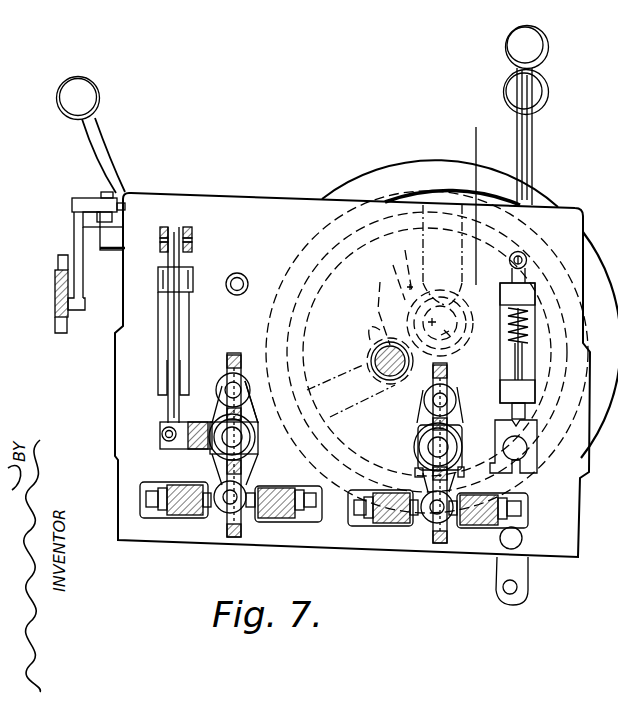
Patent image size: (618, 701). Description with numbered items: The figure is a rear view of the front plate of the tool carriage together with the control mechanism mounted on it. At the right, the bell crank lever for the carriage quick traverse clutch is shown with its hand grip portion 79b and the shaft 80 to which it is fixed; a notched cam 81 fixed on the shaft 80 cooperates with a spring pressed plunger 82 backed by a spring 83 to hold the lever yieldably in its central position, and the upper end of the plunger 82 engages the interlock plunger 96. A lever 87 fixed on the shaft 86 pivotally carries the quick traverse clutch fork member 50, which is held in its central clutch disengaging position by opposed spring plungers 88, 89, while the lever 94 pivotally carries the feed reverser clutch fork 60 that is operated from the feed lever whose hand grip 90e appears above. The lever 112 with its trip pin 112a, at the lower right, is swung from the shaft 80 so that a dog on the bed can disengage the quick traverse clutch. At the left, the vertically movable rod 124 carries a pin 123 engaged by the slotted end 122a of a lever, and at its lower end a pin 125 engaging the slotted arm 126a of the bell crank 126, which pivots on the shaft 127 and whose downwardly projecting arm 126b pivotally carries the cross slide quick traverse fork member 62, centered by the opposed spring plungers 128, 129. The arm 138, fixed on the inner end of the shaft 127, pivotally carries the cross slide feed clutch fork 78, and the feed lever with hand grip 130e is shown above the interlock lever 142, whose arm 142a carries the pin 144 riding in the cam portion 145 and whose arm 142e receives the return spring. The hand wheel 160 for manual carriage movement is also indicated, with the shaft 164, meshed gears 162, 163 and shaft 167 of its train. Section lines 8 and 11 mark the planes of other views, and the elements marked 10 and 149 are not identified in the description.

The hand grip 130e is at (78, 102).
The nut 149 is at (102, 194).
The arm of interlock lever 142e is at (103, 208).
The multiple arm lever 142 is at (72, 237).
The arm portion of interlock lever 142a is at (82, 248).
The cam portion 145 is at (58, 270).
The pin 144 is at (57, 293).
The vertically movable rod 124 is at (170, 332).
The slotted end of lever 122a is at (185, 230).
The pin 123 is at (193, 242).
The section line 11- 11 is at (180, 218).
The feed reverser clutch fork member 78 is at (242, 358).
The bell crank 126 is at (200, 423).
The arm 138 is at (250, 405).
The shaft 127 is at (238, 437).
The arm of bell crank 126a is at (218, 448).
The pin 125 is at (160, 434).
The arm of bell crank 126b is at (247, 473).
The fork member 62 is at (222, 520).
The spring plunger 128 is at (203, 522).
The spring plunger 129 is at (248, 520).
The hand wheel 160 is at (388, 178).
The section line 8- 8 is at (475, 140).
The hand grip 90e is at (524, 44).
The hand grip portion 79b is at (510, 90).
The shaft axis 10 is at (457, 320).
The shaft 164 is at (408, 262).
The gear 162 is at (407, 268).
The gear 163 is at (393, 290).
The shaft 167 is at (390, 310).
The fork member 50 is at (437, 544).
The fork 60 is at (440, 378).
The lever 94 is at (427, 412).
The shaft 86 is at (435, 446).
The lever 87 is at (420, 480).
The spring plunger 88 is at (413, 530).
The spring plunger 89 is at (457, 530).
The plunger 96 is at (510, 260).
The spring 83 is at (523, 326).
The spring pressed plunger 82 is at (517, 363).
The notched cam 81 is at (508, 430).
The shaft 80 is at (510, 448).
The lever 112 is at (522, 572).
The pin 112a is at (517, 588).